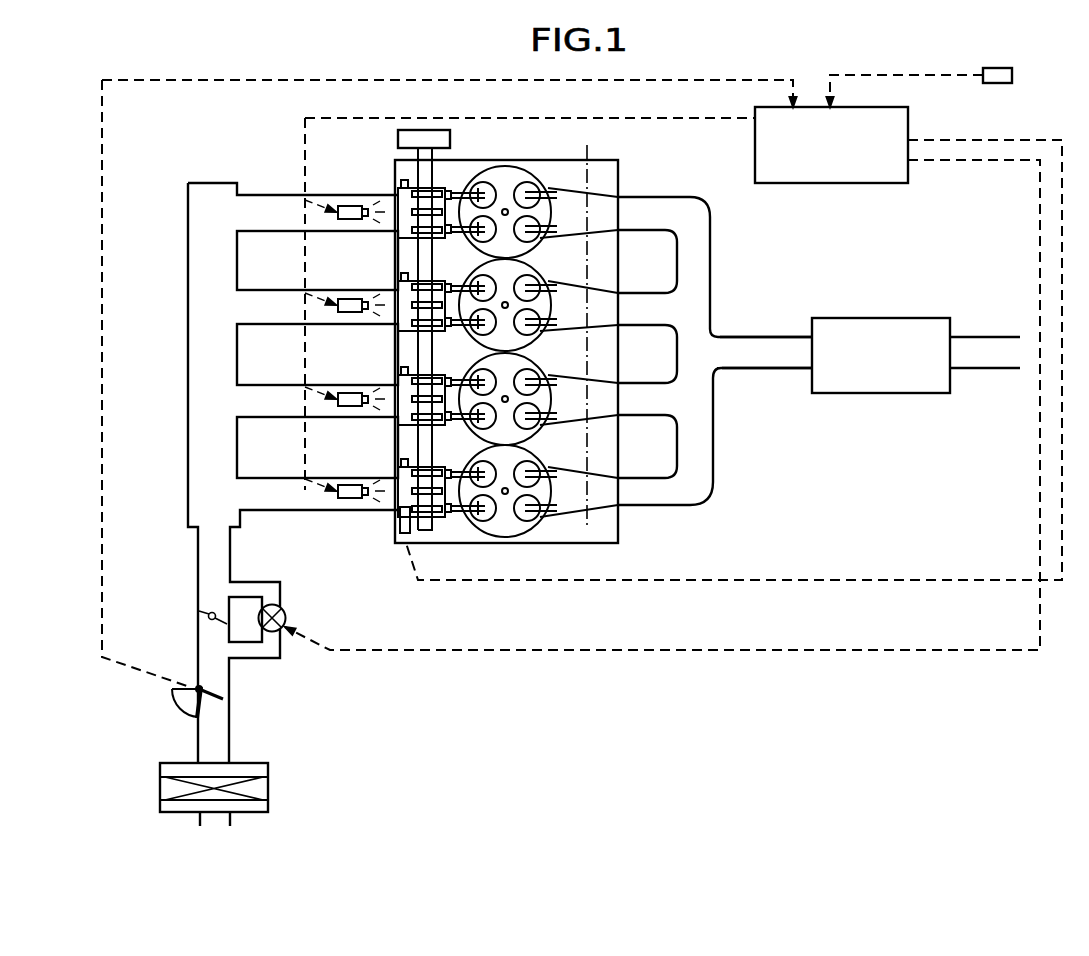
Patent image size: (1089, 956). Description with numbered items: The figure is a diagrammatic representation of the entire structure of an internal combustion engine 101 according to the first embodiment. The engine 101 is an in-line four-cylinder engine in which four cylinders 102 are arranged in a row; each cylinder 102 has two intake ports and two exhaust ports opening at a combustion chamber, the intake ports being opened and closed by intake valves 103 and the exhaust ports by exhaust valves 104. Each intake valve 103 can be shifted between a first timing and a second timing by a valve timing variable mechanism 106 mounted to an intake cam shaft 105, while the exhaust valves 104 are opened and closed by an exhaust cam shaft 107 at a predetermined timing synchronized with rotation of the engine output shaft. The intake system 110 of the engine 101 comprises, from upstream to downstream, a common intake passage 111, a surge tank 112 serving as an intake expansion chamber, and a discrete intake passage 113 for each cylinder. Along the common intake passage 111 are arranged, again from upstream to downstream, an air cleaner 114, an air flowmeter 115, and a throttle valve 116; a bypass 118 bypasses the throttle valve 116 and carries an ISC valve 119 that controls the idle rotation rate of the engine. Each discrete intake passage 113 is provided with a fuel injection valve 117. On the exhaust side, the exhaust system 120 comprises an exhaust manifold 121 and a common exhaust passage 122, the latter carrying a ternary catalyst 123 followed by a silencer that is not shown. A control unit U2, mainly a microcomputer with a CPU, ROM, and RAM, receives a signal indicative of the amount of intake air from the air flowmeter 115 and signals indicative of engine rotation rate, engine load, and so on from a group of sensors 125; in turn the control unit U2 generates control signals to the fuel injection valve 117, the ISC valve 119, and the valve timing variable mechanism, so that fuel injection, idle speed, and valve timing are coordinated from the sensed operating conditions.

The internal combustion engine 101 is at (388, 528).
The cylinder 102 is at (505, 166).
The intake valve 103 is at (490, 184).
The exhaust valve 104 is at (526, 184).
The intake cam shaft 105 is at (404, 533).
The valve timing variable mechanism 106 is at (405, 285).
The exhaust cam shaft 107 is at (586, 168).
The intake system 110 is at (183, 405).
The common intake passage 111 is at (200, 560).
The surge tank 112 is at (189, 446).
The discrete intake passage 113 is at (270, 194).
The air cleaner 114 is at (268, 782).
The air flowmeter 115 is at (178, 700).
The throttle valve 116 is at (208, 614).
The fuel injection valve 117 is at (350, 205).
The bypass 118 is at (272, 659).
The ISC valve 119 is at (288, 611).
The exhaust system 120 is at (818, 302).
The exhaust manifold 121 is at (712, 221).
The common exhaust passage 122 is at (770, 337).
The ternary catalyst 123 is at (905, 318).
The group of sensors 125 is at (1013, 80).
The control unit U2 is at (909, 112).